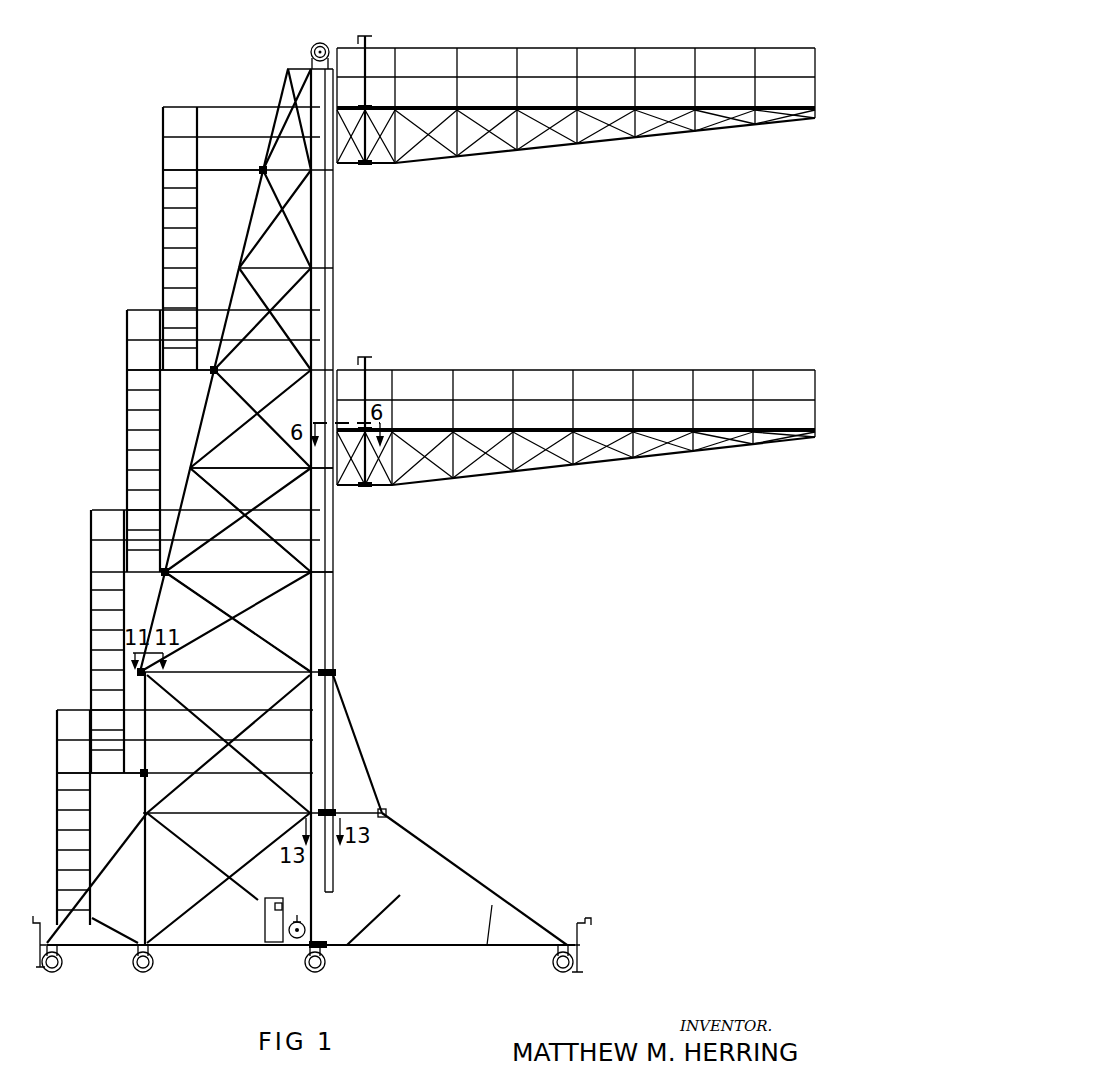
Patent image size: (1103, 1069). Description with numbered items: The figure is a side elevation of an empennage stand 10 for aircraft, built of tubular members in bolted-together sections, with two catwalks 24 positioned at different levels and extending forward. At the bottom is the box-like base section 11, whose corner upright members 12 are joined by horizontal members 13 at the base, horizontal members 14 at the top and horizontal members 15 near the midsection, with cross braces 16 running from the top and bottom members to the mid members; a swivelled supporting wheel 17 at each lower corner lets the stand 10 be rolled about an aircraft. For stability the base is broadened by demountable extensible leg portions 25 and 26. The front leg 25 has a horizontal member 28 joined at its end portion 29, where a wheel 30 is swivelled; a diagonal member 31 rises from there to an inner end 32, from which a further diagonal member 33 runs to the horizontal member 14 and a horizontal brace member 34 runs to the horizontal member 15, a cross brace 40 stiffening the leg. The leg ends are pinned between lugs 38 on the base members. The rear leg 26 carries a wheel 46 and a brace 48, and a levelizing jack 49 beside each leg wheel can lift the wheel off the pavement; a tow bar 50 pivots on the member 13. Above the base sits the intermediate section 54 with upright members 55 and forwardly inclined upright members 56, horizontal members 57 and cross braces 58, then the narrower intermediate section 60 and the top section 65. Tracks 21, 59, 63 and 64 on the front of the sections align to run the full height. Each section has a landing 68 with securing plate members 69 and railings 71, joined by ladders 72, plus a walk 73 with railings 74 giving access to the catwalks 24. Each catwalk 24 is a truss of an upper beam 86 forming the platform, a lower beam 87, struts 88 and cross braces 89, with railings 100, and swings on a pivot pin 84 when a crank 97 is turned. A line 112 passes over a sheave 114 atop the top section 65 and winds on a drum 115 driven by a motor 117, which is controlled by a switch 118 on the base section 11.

The empennage stand 10 is at (344, 632).
The base section 11 is at (344, 871).
The upright members 12 is at (147, 900).
The horizontal members 13 is at (215, 947).
The horizontal members 14 is at (212, 675).
The horizontal members 15 is at (262, 814).
The cross braces 16 is at (270, 782).
The supporting wheel 17 is at (141, 972).
The tracks 21 is at (331, 748).
The catwalks 24 is at (576, 268).
The extensible leg portions 25 is at (475, 897).
The extensible leg portions 26 is at (84, 910).
The horizontal member 28 is at (440, 948).
The end portion 29 is at (583, 945).
The wheel 30 is at (556, 971).
The diagonal member 31 is at (455, 860).
The inner end 32 is at (385, 813).
The diagonal member 33 is at (357, 731).
The horizontal brace member 34 is at (370, 822).
The lugs 38 is at (337, 672).
The cross brace 40 is at (490, 920).
The wheel 46 is at (46, 970).
The brace 48 is at (100, 896).
The levelizing jack 49 is at (33, 918).
The tow bar 50 is at (94, 918).
The intermediate section 54 is at (344, 576).
The upright members 55 is at (320, 406).
The upright members 56 is at (208, 426).
The horizontal members 57 is at (257, 470).
The cross braces 58 is at (287, 549).
The tracks 59 is at (336, 538).
The intermediate section 60 is at (344, 310).
The tracks 63 is at (340, 325).
The tracks 64 is at (336, 202).
The top section 65 is at (342, 233).
The platform or landing 68 is at (244, 172).
The securing plate members 69 is at (161, 578).
The railings 71 is at (232, 107).
The ladders or stairs 72 is at (162, 215).
The walk or further platform 73 is at (300, 173).
The railings 74 is at (304, 141).
The pivot pin 84 is at (363, 106).
The upper beam 86 is at (482, 106).
The lower beam 87 is at (503, 153).
The struts 88 is at (556, 147).
The cross braces 89 is at (621, 143).
The crank 97 is at (368, 36).
The railings 100 is at (678, 43).
The line or cable 112 is at (308, 251).
The sheave 114 is at (311, 46).
The drum 115 is at (291, 940).
The motor 117 is at (296, 916).
The switch 118 is at (272, 906).